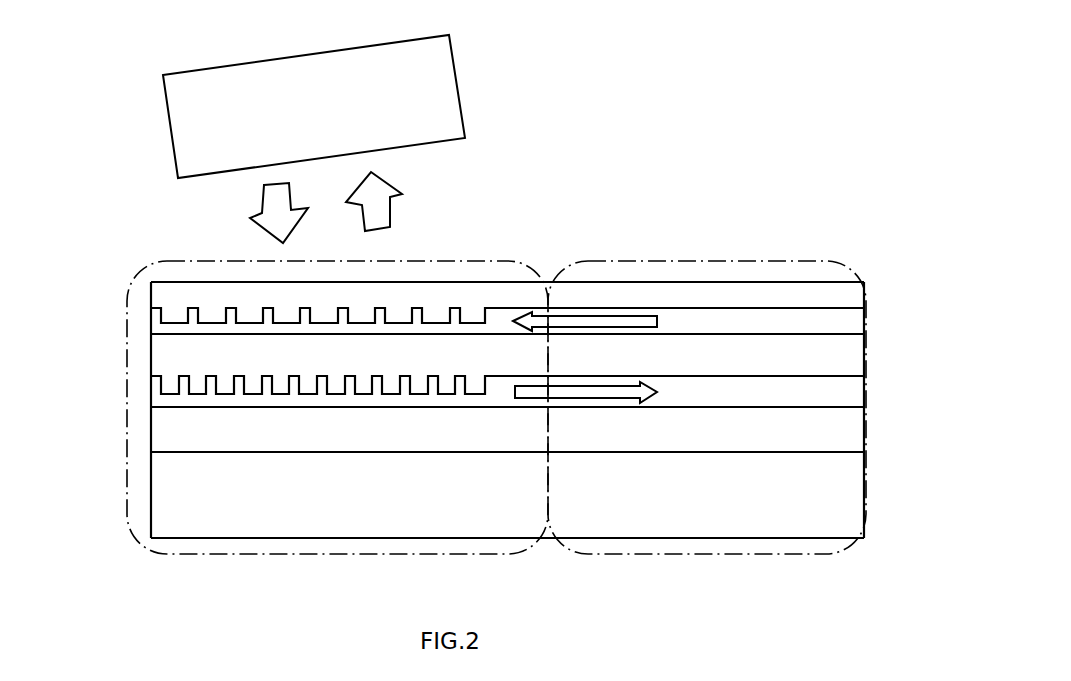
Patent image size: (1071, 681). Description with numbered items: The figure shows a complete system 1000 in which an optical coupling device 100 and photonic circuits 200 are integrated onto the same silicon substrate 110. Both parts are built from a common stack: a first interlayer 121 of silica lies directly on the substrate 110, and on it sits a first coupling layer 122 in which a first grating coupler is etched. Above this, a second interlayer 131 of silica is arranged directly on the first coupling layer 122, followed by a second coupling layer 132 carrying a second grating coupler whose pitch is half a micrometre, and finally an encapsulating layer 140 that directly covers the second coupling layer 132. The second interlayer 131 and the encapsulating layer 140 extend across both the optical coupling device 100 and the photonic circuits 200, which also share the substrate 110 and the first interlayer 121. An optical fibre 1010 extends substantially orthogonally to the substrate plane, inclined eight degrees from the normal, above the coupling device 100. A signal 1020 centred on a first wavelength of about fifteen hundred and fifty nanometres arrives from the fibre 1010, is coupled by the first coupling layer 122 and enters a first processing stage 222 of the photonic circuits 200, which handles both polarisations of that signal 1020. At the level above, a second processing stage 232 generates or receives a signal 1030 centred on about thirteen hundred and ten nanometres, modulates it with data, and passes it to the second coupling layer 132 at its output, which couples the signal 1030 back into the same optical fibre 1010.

The complete system 1000 is at (96, 53).
The optical fibre 1010 is at (180, 122).
The signal 1020 is at (270, 197).
The signal 1030 is at (378, 212).
The optical coupling device 100 is at (135, 282).
The photonic circuits 200 is at (768, 260).
The substrate 110 is at (167, 495).
The first interlayer 121 is at (165, 437).
The first coupling layer 122 is at (165, 398).
The second interlayer 131 is at (165, 363).
The second coupling layer 132 is at (165, 328).
The encapsulating layer 140 is at (165, 293).
The first processing stage 222 is at (858, 397).
The second processing stage 232 is at (858, 322).